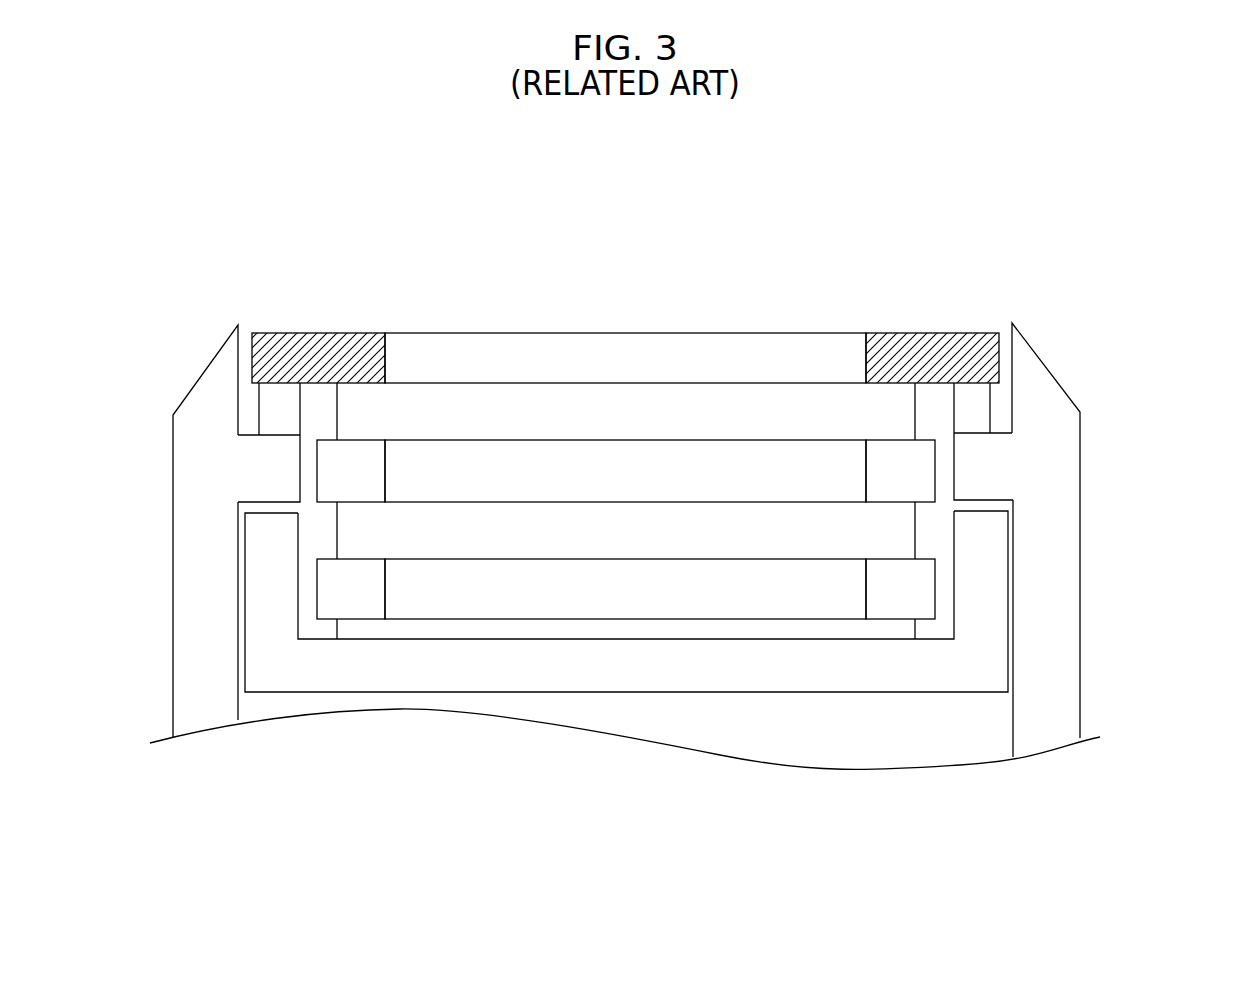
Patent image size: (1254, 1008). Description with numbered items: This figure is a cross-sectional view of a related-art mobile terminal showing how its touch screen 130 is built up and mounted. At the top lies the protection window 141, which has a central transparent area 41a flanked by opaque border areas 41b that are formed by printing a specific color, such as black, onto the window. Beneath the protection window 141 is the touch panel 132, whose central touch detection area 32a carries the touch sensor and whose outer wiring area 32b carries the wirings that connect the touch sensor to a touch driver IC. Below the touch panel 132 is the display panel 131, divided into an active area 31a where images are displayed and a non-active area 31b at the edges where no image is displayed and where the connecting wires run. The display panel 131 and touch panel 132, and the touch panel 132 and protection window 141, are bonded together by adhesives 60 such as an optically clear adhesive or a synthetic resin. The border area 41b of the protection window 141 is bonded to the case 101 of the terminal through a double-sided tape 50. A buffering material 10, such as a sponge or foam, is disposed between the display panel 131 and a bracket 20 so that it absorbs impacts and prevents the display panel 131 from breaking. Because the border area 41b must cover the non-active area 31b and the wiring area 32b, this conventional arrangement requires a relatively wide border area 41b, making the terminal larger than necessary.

The touch screen 130 is at (1037, 200).
The protection window 141 is at (253, 267).
The transparent area 41a is at (385, 324).
The border area 41b is at (253, 324).
The case 101 is at (225, 335).
The double-sided tape 50 is at (260, 400).
The adhesive 60 is at (342, 417).
The touch panel 132 is at (1160, 443).
The touch detection area 32a is at (857, 463).
The wiring area 32b is at (920, 492).
The display panel 131 is at (1164, 560).
The active area 31a is at (857, 580).
The non-active area 31b is at (918, 610).
The buffering material 10 is at (890, 630).
The bracket 20 is at (957, 672).